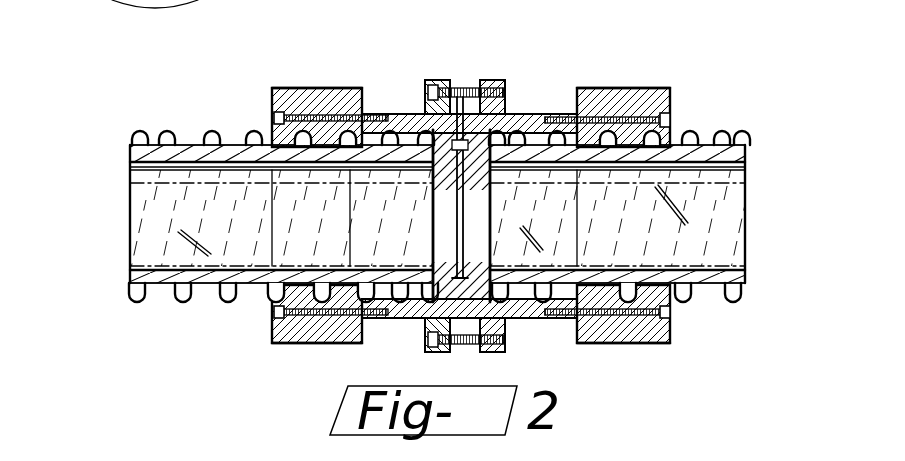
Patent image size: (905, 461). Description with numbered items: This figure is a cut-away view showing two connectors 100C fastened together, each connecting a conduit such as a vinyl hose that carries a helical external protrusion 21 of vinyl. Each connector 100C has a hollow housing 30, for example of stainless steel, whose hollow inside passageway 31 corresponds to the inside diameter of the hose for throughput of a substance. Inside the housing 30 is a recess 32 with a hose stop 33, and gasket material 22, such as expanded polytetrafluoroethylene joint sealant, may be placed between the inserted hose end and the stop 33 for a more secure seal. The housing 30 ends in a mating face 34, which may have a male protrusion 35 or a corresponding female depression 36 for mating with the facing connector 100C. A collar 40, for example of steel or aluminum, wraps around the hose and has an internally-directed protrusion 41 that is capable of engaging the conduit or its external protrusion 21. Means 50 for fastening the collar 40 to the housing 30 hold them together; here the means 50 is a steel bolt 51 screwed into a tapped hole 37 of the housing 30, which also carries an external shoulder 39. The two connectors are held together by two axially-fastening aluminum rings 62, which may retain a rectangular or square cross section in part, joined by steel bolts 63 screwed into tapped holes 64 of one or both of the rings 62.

The connector 100C is at (165, 104).
The helical external protrusion 21 is at (211, 130).
The gasket material 22 is at (276, 148).
The hollow housing 30 is at (412, 131).
The hollow inside passageway 31 is at (452, 268).
The recess 32 is at (392, 312).
The hose stop 33 is at (432, 302).
The mating face 34 is at (420, 130).
The male protrusion 35 is at (522, 187).
The female depression 36 is at (493, 166).
The tapped hole 37 is at (270, 114).
The external shoulder 39 is at (469, 90).
The collar 40 is at (346, 88).
The internally-directed protrusion 41 is at (692, 144).
The means for fastening the collar to the housing 50 is at (378, 116).
The steel bolt 51 is at (273, 116).
The axially-fastening aluminum ring 62 is at (447, 80).
The steel bolt 63 is at (437, 88).
The tapped hole 64 is at (506, 92).